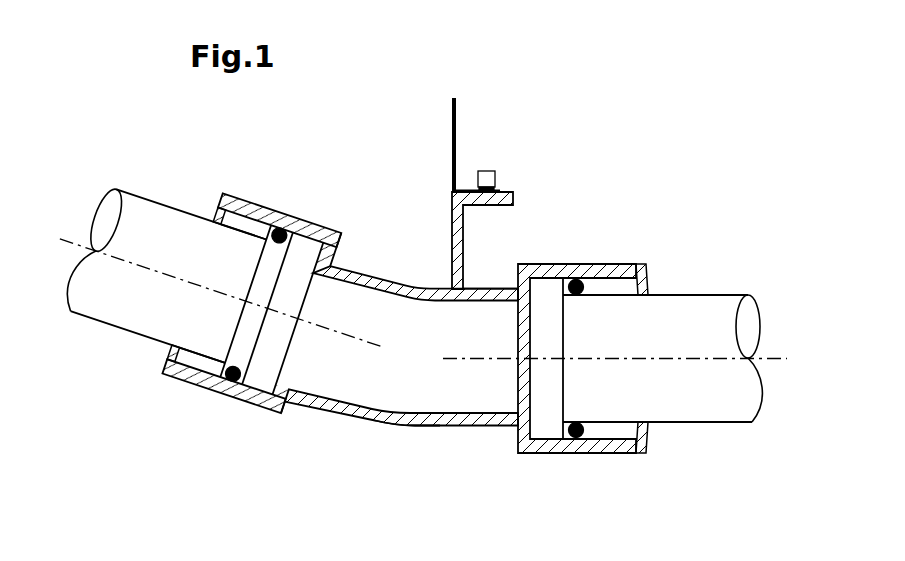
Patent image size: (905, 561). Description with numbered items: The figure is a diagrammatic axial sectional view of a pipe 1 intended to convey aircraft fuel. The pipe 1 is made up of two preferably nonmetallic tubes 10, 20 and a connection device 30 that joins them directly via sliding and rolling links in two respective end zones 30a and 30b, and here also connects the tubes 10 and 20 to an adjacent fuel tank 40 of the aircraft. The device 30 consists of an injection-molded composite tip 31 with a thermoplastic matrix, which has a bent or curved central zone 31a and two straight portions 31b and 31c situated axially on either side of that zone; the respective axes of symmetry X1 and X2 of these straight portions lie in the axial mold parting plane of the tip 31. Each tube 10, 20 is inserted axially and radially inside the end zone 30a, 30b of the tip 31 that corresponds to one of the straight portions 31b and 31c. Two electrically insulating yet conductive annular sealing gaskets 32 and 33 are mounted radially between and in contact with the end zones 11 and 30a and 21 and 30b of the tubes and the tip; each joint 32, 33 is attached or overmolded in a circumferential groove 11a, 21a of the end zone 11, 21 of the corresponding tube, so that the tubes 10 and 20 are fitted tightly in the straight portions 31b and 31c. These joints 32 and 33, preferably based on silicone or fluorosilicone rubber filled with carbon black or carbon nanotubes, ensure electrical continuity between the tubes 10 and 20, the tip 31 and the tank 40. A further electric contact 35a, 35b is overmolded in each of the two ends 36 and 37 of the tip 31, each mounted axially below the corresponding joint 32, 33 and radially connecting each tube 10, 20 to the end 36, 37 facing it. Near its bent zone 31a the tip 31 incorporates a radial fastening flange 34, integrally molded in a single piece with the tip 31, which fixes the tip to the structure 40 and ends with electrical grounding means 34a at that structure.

The pipe 1 is at (638, 148).
The tube 10 is at (146, 192).
The end zone of tube 11 is at (205, 345).
The circumferential groove 11a is at (250, 350).
The tube 20 is at (730, 286).
The end zone of tube 21 is at (615, 420).
The circumferential groove 21a is at (563, 388).
The connection device 30 is at (328, 454).
The end zone of connection device 30a is at (256, 194).
The end zone of connection device 30b is at (599, 248).
The tip 31 is at (416, 443).
The bent or curved central zone 31a is at (418, 280).
The straight portion 31b is at (357, 262).
The straight portion 31c is at (492, 288).
The annular sealing gasket 32 is at (272, 240).
The annular sealing gasket 33 is at (575, 292).
The fastening flange 34 is at (440, 210).
The electrical grounding means 34a is at (487, 171).
The electric contact 35a is at (225, 199).
The electric contact 35b is at (648, 432).
The end of tip 36 is at (166, 362).
The end of tip 37 is at (640, 262).
The fuel tank 40 is at (440, 134).
The axis of symmetry X1 is at (70, 236).
The axis of symmetry X2 is at (777, 362).